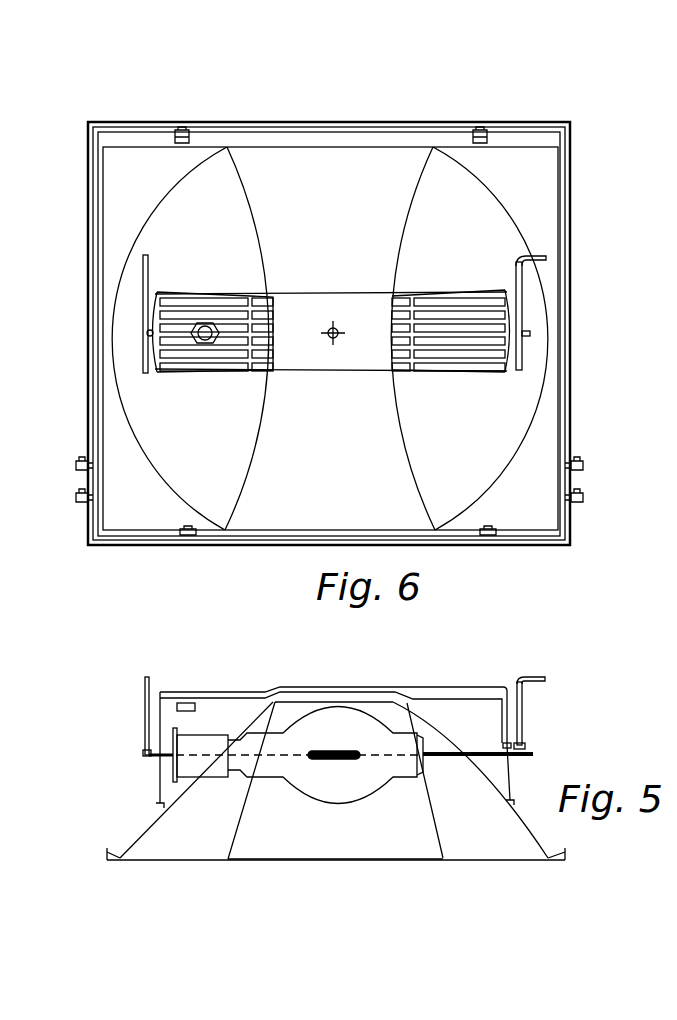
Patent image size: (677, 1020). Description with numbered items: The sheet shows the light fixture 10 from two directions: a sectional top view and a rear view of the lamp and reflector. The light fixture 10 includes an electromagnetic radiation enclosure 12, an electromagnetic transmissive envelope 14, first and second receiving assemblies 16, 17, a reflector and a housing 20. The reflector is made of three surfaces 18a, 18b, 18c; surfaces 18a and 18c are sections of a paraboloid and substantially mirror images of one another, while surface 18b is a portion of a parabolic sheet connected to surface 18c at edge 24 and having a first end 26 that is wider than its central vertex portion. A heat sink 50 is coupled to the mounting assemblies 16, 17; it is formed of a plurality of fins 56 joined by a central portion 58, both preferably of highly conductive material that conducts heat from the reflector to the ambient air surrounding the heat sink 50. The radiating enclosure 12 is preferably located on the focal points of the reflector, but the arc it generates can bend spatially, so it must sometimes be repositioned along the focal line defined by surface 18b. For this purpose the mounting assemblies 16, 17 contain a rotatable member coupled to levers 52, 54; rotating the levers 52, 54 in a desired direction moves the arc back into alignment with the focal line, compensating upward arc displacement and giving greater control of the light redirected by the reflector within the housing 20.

In FIG. 6, the light fixture 10 is at (131, 116).
In FIG. 5, the light fixture 10 is at (114, 693).
In FIG. 5, the electromagnetic radiation enclosure 12 is at (320, 762).
In FIG. 5, the electromagnetic transmissive envelope 14 is at (372, 792).
In FIG. 5, the first receiving assembly 16 is at (193, 775).
In FIG. 5, the second receiving assembly 17 is at (438, 758).
In FIG. 6, the reflector surface 18a is at (206, 241).
In FIG. 6, the reflector surface 18b is at (337, 188).
In FIG. 5, the reflector surface 18b is at (335, 848).
In FIG. 6, the reflector surface 18c is at (461, 243).
In FIG. 6, the housing 20 is at (573, 209).
In FIG. 5, the housing 20 is at (120, 850).
In FIG. 6, the edge 24 is at (250, 525).
In FIG. 6, the first end 26 is at (248, 146).
In FIG. 6, the heat sink 50 is at (302, 353).
In FIG. 5, the heat sink 50 is at (443, 686).
In FIG. 6, the lever 52 is at (524, 270).
In FIG. 5, the lever 52 is at (522, 701).
In FIG. 6, the lever 54 is at (143, 268).
In FIG. 5, the lever 54 is at (147, 700).
In FIG. 6, the fins 56 is at (179, 357).
In FIG. 6, the central portion 58 is at (302, 312).